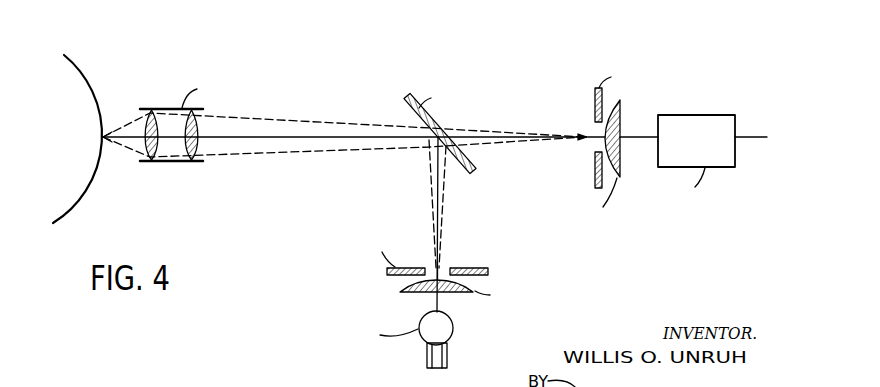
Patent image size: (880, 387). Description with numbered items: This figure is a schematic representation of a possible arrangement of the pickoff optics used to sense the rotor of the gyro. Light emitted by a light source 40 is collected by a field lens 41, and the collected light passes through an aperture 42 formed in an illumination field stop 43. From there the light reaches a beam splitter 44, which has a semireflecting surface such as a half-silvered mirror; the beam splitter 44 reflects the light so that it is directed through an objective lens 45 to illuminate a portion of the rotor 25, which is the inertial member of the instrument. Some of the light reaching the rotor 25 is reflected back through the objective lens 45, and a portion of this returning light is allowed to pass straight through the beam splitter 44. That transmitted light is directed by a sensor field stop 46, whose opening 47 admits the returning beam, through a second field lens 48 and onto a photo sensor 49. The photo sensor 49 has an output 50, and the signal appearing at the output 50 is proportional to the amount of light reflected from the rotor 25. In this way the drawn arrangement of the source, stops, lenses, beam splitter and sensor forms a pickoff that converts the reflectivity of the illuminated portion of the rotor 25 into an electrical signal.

The rotor 25 is at (78, 85).
The light source 40 is at (447, 353).
The field lens 41 is at (414, 294).
The aperture 42 is at (444, 268).
The illumination field stop 43 is at (488, 268).
The beam splitter 44 is at (474, 170).
The objective lens 45 is at (179, 162).
The sensor field stop 46 is at (595, 90).
The sensor field stop aperture 47 is at (596, 130).
The field lens 48 is at (622, 136).
The photo sensor 49 is at (687, 114).
The output 50 is at (739, 137).